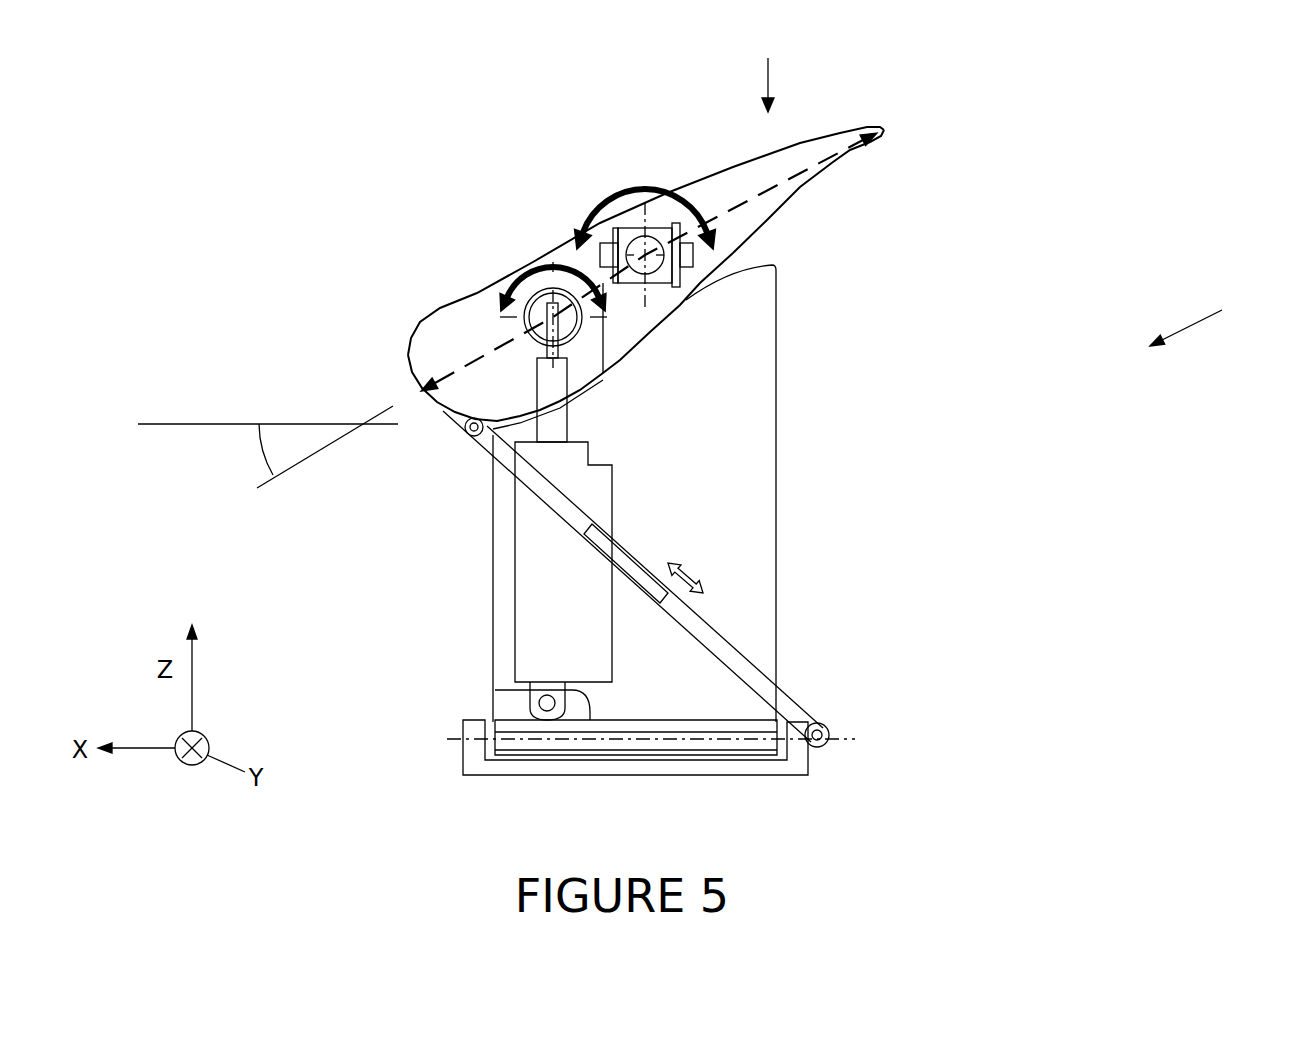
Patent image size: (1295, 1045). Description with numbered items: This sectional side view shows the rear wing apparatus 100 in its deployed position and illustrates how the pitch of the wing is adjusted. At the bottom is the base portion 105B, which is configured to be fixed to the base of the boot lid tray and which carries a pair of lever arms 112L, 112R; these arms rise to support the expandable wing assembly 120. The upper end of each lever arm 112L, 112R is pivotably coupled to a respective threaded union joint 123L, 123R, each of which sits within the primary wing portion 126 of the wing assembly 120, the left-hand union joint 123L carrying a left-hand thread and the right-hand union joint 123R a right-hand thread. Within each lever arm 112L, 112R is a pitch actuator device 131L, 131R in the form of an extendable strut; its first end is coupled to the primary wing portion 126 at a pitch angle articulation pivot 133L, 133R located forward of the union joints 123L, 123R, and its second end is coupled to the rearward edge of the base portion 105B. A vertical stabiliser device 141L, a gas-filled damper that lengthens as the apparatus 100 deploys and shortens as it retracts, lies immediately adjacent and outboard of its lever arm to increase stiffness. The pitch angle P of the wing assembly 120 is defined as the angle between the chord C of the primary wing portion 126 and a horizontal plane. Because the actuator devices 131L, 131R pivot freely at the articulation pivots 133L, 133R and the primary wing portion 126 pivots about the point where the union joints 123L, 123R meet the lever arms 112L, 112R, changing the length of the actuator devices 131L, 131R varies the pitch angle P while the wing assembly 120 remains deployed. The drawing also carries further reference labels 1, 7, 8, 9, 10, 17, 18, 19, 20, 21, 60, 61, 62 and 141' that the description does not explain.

The airfoil blade 1 is at (812, 140).
The upper rotary hub 7 is at (661, 236).
The hub bracket 8 is at (651, 206).
The frame member 9 is at (763, 436).
The frame member 10 is at (790, 493).
The base rail 17 is at (797, 758).
The lower rotary hub 18 is at (538, 302).
The actuator strut 19 is at (522, 497).
The actuator rod 20 is at (568, 498).
The strut pivot 21 is at (755, 678).
The rotation of lower hub 60 is at (503, 305).
The rotation of upper hub 61 is at (718, 243).
The linear actuation direction 62 is at (713, 574).
The rear wing apparatus 100 is at (1208, 318).
The base portion 105B is at (788, 770).
The left-hand lever arm 112L is at (548, 551).
The right-hand lever arm 112R is at (831, 493).
The expandable wing assembly 120 is at (768, 70).
The left-hand threaded union joint 123L is at (633, 243).
The right-hand threaded union joint 123R is at (601, 190).
The primary wing portion 126 is at (815, 182).
The left-hand pitch actuator device 131L is at (548, 592).
The right-hand pitch actuator device 131R is at (469, 689).
The left pitch angle articulation pivot 133L is at (527, 330).
The right pitch angle articulation pivot 133R is at (552, 329).
The left vertical stabiliser device 141L is at (596, 579).
The linear actuator alternate position 141' is at (855, 636).
The chord C is at (833, 150).
The pitch angle P is at (275, 450).